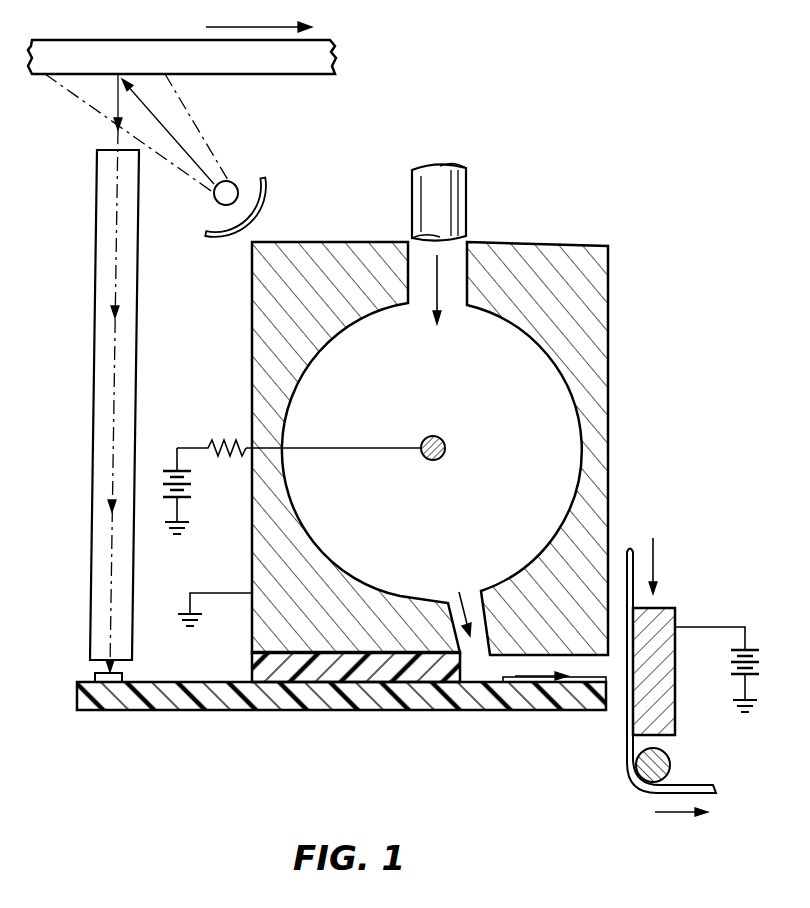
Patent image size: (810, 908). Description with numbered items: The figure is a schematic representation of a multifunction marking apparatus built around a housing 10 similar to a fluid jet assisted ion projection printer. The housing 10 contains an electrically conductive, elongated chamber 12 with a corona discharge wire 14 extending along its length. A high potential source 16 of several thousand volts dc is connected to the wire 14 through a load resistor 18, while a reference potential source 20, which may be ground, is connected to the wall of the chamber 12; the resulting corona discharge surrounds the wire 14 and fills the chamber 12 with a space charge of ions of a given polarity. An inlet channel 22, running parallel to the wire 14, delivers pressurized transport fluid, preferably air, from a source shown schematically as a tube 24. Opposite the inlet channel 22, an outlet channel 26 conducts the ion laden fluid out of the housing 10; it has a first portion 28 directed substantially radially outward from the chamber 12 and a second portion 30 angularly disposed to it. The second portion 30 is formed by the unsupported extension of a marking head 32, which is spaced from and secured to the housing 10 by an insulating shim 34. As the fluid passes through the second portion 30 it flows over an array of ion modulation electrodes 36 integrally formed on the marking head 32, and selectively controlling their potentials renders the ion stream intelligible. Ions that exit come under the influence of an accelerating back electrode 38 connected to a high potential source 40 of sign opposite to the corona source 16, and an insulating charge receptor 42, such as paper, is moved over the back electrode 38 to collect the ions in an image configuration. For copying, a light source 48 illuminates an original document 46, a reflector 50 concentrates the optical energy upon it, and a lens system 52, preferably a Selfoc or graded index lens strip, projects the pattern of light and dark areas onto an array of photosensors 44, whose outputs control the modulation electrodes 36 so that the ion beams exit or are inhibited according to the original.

The housing 10 is at (587, 220).
The chamber 12 is at (537, 338).
The corona discharge wire 14 is at (446, 446).
The high potential source 16 is at (187, 483).
The load resistor 18 is at (227, 438).
The reference potential source 20 is at (187, 613).
The inlet channel 22 is at (467, 247).
The tube 24 is at (470, 192).
The outlet channel 26 is at (480, 668).
The first portion 28 is at (480, 598).
The second portion 30 is at (502, 674).
The marking head 32 is at (350, 704).
The insulating shim 34 is at (293, 677).
The ion modulation electrodes 36 is at (553, 675).
The accelerating back electrode 38 is at (677, 610).
The high potential source 40 is at (740, 668).
The insulating charge receptor 42 is at (694, 785).
The array of photosensors 44 is at (122, 676).
The original document 46 is at (277, 76).
The light source 48 is at (236, 184).
The reflector 50 is at (266, 186).
The lens system 52 is at (140, 305).